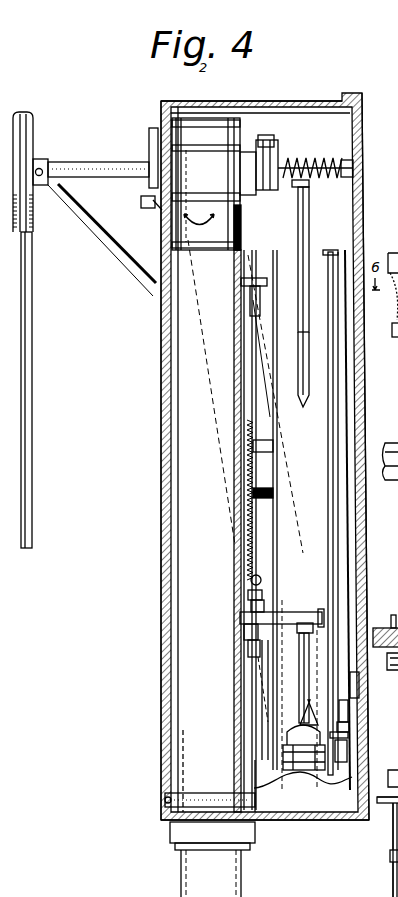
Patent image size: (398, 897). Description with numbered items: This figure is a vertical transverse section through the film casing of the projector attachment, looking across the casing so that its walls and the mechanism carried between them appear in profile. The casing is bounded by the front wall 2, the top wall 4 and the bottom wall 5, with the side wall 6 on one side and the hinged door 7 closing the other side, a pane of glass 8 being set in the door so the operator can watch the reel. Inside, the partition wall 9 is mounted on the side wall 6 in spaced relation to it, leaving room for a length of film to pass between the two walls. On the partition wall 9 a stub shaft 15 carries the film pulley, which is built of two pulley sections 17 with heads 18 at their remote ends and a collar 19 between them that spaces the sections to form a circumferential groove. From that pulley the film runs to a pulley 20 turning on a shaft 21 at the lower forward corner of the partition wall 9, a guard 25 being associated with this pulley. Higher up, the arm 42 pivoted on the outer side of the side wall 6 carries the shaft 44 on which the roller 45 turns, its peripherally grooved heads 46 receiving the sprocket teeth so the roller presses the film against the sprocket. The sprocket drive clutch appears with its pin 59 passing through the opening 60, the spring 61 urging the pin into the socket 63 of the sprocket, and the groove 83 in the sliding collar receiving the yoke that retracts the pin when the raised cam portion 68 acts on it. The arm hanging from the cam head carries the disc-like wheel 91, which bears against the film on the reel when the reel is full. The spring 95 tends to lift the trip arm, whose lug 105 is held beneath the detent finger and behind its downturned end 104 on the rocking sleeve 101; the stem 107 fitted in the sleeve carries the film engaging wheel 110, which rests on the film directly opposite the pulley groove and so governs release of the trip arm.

The front wall 2 is at (343, 790).
The top wall 4 is at (259, 104).
The bottom wall 5 is at (310, 822).
The side wall 6 is at (166, 480).
The hinged door 7 is at (358, 181).
The pane of glass 8 is at (350, 388).
The partition wall 9 is at (238, 421).
The stub shaft 15 is at (348, 709).
The pulley sections 17 is at (303, 775).
The heads 18 is at (347, 728).
The collar 19 is at (311, 718).
The pulley 20 is at (328, 776).
The shaft 21 is at (342, 738).
The guard 25 is at (273, 790).
The arm 42 is at (148, 158).
The shaft 44 is at (151, 204).
The roller 45 is at (201, 198).
The peripherally grooved heads 46 is at (162, 209).
The pin 59 is at (395, 838).
The opening 60 is at (396, 813).
The spring 61 is at (334, 164).
The socket 63 is at (346, 754).
The raised cam portion 68 is at (307, 238).
The groove 83 is at (386, 879).
The disc-like wheel 91 is at (304, 410).
The spring 95 is at (259, 468).
The sleeve 101 is at (284, 594).
The downturned end 104 is at (265, 626).
The lug 105 is at (248, 650).
The stem 107 is at (306, 647).
The film engaging wheel 110 is at (300, 673).